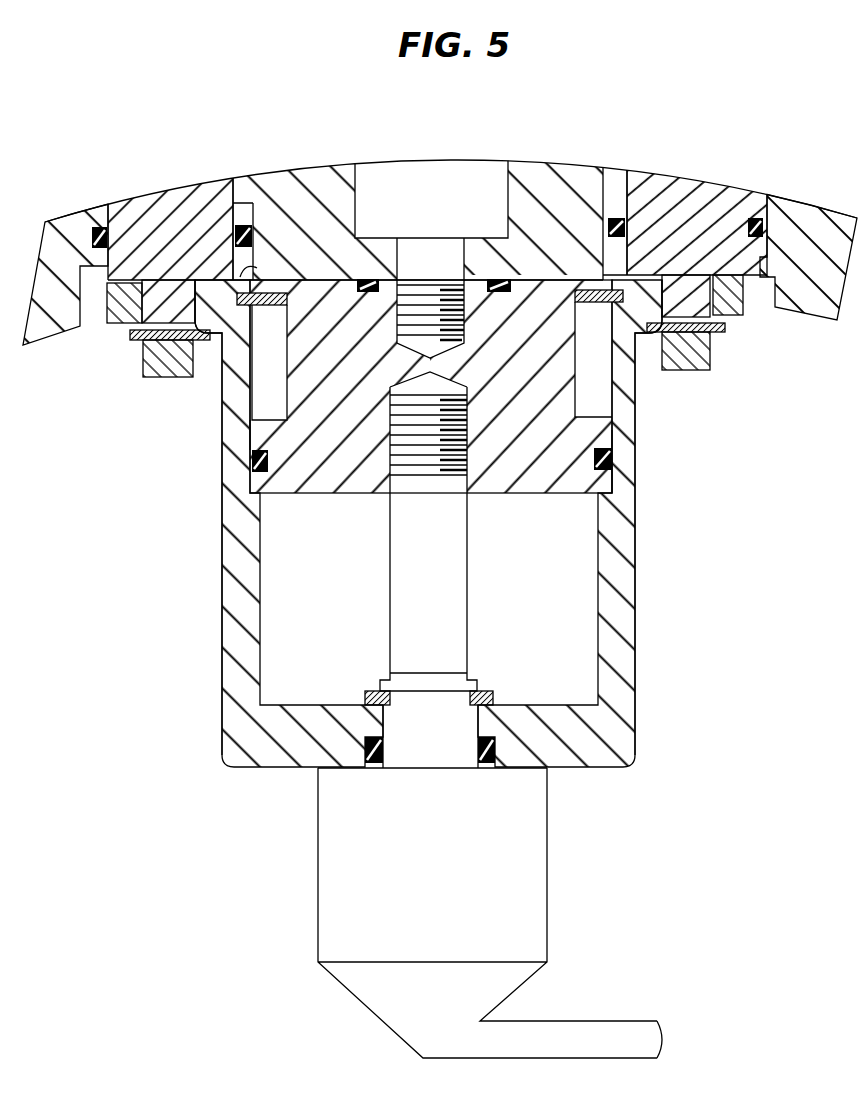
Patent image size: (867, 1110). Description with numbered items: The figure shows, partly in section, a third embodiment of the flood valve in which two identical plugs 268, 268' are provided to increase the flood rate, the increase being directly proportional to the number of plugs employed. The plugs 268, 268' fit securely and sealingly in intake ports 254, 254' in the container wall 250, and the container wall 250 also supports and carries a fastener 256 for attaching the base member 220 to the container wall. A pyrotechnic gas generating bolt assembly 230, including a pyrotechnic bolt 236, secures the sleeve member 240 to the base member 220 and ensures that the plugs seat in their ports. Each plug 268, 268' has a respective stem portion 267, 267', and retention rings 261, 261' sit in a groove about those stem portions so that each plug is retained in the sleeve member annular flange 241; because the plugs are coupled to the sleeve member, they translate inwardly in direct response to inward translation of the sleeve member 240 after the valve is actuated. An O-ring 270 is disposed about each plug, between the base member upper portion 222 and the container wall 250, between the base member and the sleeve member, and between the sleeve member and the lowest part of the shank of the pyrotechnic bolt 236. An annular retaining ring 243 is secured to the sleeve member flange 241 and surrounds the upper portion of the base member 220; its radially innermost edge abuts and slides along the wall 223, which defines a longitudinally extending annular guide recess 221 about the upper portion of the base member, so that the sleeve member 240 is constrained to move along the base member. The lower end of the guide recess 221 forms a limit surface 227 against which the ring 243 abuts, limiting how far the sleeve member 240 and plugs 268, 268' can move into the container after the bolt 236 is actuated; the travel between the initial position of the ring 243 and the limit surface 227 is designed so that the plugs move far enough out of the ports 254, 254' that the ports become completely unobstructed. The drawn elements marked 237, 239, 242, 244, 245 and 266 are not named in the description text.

The base member 220 is at (300, 458).
The annular guide recess 221 is at (598, 420).
The base member upper portion 222 is at (300, 372).
The wall 223 is at (600, 400).
The limit surface 227 is at (258, 420).
The pyrotechnic gas generating bolt assembly 230 is at (255, 906).
The pyrotechnic bolt 236 is at (400, 598).
The washer 237 is at (487, 690).
The threaded portion 239 is at (377, 458).
The sleeve member 240 is at (200, 768).
The sleeve member annular flange 241 is at (108, 320).
The groove 242 is at (625, 460).
The annular retaining ring 243 is at (600, 352).
The housing 244 is at (625, 662).
The chamber 245 is at (540, 584).
The container wall 250 is at (325, 185).
The intake port 254 is at (258, 200).
The intake port 254' is at (599, 198).
The fastener 256 is at (432, 180).
The retention ring 261 is at (141, 368).
The retention ring 261' is at (724, 337).
The seat 266 is at (232, 268).
The stem portion 267 is at (166, 388).
The stem portion 267' is at (724, 357).
The plug 268 is at (160, 233).
The plug 268' is at (697, 217).
The O-ring 270 is at (495, 278).